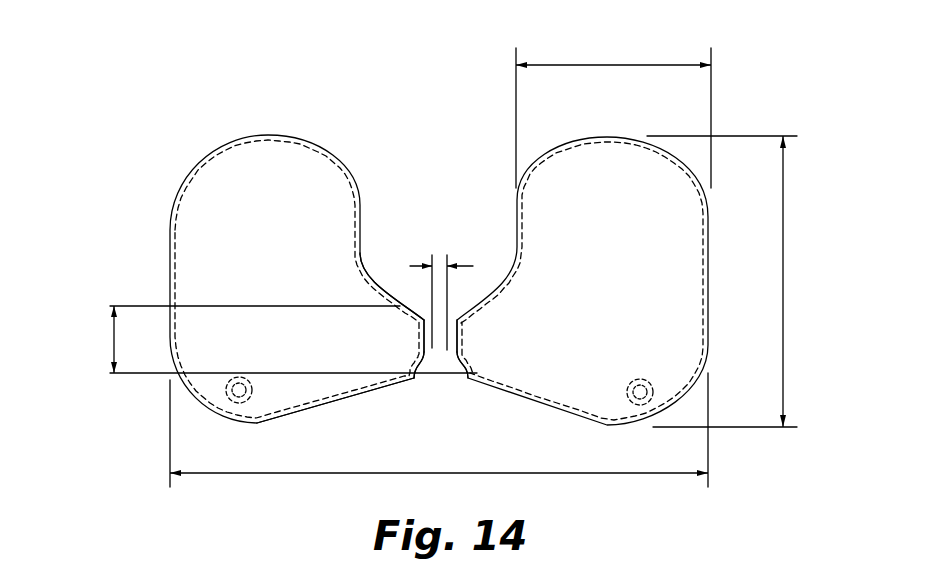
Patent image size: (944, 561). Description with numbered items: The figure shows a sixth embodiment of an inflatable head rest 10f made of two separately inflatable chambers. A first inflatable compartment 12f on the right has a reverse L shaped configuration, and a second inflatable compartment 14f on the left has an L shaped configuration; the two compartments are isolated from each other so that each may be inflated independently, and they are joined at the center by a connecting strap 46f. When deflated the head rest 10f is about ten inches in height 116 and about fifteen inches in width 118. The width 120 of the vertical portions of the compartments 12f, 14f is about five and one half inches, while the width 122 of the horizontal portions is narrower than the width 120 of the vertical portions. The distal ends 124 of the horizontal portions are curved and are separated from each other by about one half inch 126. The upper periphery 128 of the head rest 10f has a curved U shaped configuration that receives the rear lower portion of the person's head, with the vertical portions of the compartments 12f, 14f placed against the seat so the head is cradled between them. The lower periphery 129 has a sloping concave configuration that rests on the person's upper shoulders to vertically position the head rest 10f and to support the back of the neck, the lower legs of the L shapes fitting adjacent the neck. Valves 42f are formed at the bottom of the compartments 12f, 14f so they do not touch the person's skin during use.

The head rest 10f is at (415, 78).
The first inflatable compartment 12f is at (578, 162).
The second inflatable compartment 14f is at (208, 172).
The valves 42f is at (233, 395).
The connecting strap 46f is at (453, 417).
The height 116 is at (783, 250).
The width 118 is at (545, 475).
The width of the vertical portions 120 is at (612, 65).
The width of the horizontal portions 122 is at (112, 338).
The distal ends 124 is at (413, 343).
The separation 126 is at (443, 262).
The upper periphery 128 is at (362, 202).
The lower periphery 129 is at (320, 413).